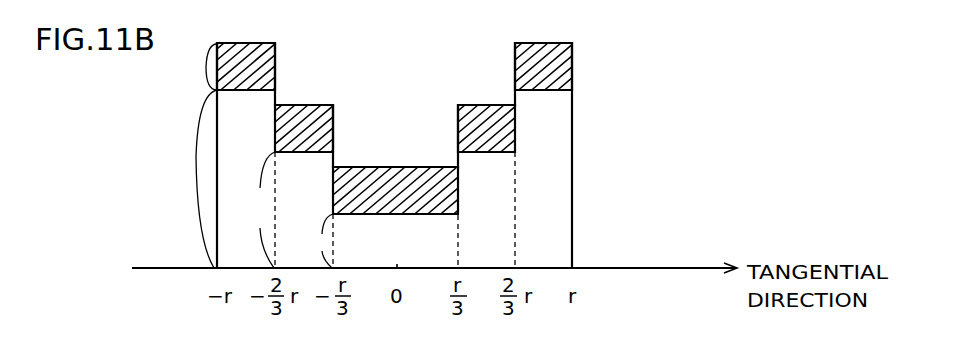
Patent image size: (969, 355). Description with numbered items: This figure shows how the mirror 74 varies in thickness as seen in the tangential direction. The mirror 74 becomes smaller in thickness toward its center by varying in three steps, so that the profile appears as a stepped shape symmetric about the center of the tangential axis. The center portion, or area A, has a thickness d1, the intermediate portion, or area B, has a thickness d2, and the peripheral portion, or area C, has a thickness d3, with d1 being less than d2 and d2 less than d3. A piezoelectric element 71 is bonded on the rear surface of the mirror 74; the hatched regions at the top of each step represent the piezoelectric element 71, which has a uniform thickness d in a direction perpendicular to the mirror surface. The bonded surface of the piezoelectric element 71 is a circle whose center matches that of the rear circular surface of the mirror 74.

The piezoelectric element 71 is at (552, 64).
The mirror 74 is at (552, 132).
The step height d is at (206, 67).
The thickness of center portion (area A) d1 is at (317, 241).
The thickness of intermediate portion (area B) d2 is at (258, 210).
The thickness of peripheral portion (area C) d3 is at (197, 179).